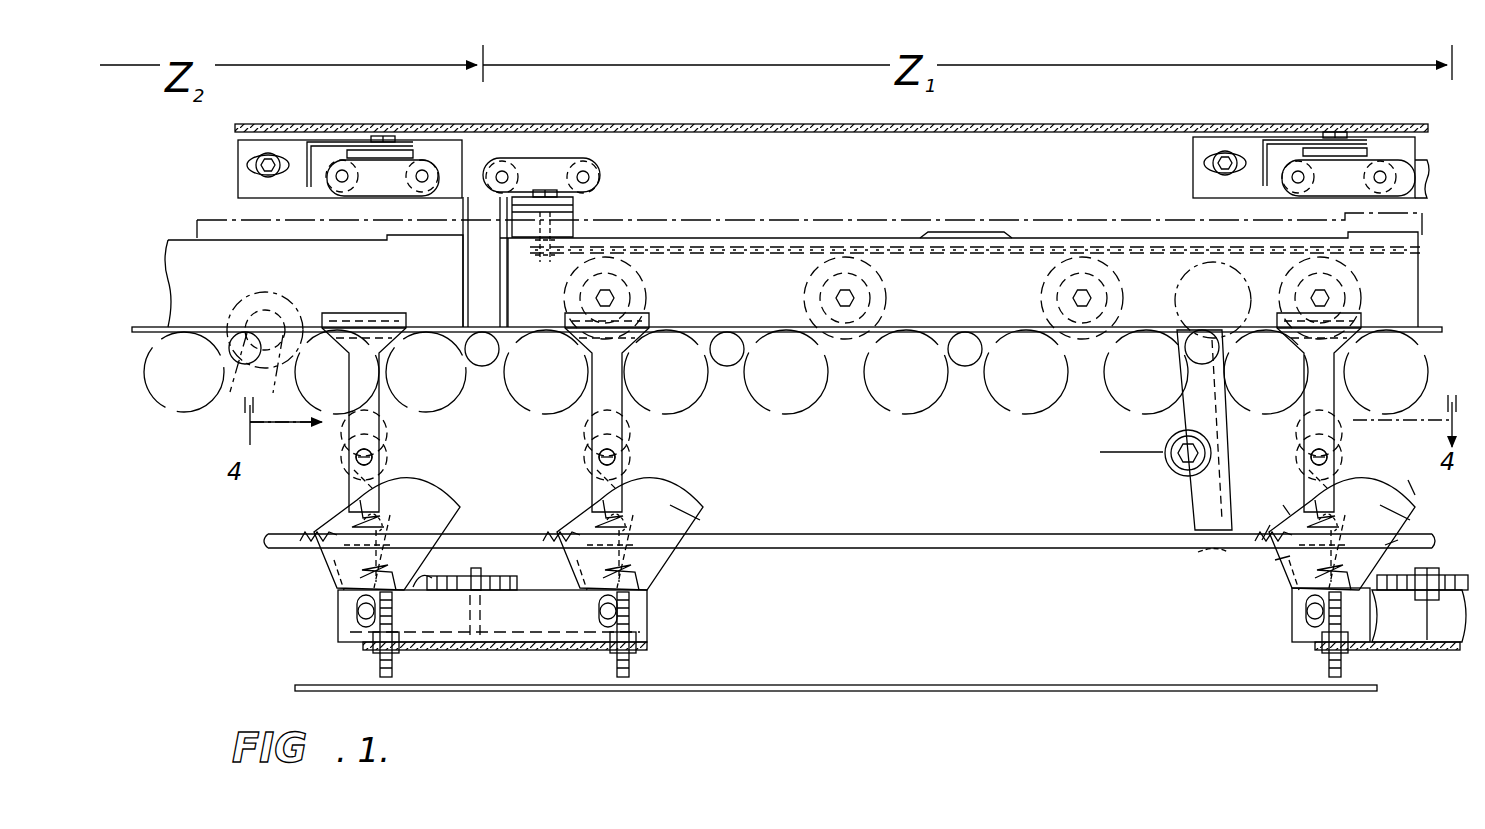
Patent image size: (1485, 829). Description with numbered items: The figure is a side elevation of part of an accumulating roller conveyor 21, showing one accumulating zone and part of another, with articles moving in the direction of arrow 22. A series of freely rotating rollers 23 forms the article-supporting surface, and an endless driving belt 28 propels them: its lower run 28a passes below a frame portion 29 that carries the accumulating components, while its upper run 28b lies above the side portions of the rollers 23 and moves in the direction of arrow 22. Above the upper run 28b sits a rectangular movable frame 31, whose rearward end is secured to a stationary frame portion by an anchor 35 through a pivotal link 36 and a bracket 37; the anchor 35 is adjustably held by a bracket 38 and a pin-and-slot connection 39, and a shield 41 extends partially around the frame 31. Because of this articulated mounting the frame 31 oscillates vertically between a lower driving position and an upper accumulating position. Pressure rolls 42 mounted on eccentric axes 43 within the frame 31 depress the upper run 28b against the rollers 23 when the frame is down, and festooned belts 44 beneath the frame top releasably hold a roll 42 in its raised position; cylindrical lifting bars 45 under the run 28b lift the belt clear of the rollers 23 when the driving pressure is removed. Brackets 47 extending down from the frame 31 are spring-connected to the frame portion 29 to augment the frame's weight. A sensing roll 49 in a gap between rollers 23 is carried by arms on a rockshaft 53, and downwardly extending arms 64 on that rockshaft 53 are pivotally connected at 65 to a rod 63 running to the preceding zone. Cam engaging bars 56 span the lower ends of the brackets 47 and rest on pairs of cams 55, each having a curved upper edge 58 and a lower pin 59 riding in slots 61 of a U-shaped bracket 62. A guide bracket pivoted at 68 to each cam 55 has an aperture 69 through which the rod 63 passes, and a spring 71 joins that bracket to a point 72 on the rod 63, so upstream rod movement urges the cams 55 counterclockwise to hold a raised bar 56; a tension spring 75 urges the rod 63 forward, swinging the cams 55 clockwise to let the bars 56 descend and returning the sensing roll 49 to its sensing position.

The conveyor 21 is at (707, 728).
The arrow 22 is at (790, 97).
The rollers 23 is at (925, 400).
The endless driving belt 28 is at (888, 326).
The lower run 28a is at (905, 672).
The upper run 28b is at (690, 327).
The frame portion 29 is at (650, 644).
The movable frame 31 is at (727, 235).
The anchor 35 is at (340, 148).
The pivotal link 36 is at (474, 162).
The bracket 37 is at (548, 167).
The bracket 38 is at (240, 181).
The pin-and-slot connection 39 is at (258, 158).
The shield 41 is at (282, 130).
The pressure rolls 42 is at (632, 258).
The eccentric axes 43 is at (848, 290).
The festooned belts 44 is at (762, 220).
The lifting bars 45 is at (726, 366).
The brackets 47 is at (606, 290).
The sensing roll 49 is at (1213, 318).
The rockshaft 53 is at (1111, 452).
The cams 55 is at (682, 512).
The cam engaging bars 56 is at (425, 433).
The curved upper edge 58 is at (700, 477).
The pin 59 is at (355, 618).
The slots 61 is at (1313, 625).
The U-shaped bracket 62 is at (538, 650).
The rod 63 is at (1078, 540).
The arms 64 is at (1215, 478).
The pivotal connection 65 is at (1198, 552).
The pivot 68 is at (1408, 480).
The aperture 69 is at (1398, 540).
The spring 71 is at (1283, 505).
The point 72 is at (1270, 525).
The tension spring 75 is at (1275, 560).